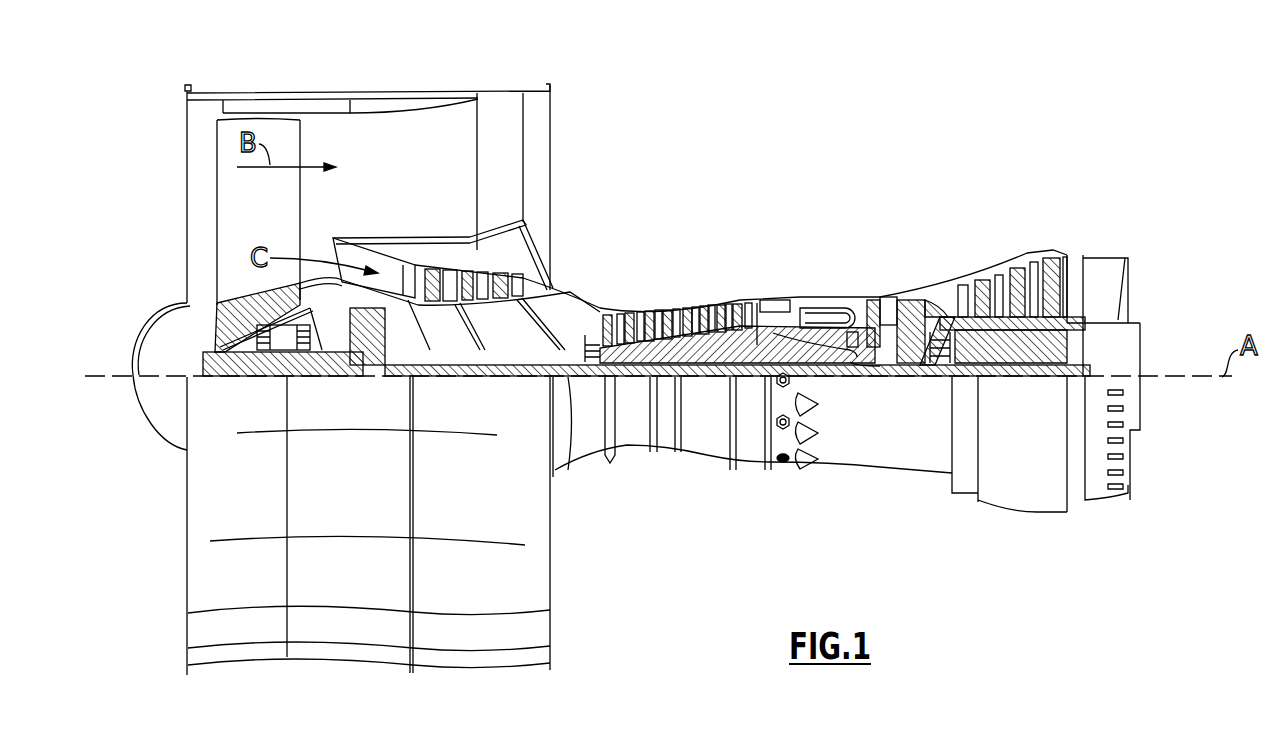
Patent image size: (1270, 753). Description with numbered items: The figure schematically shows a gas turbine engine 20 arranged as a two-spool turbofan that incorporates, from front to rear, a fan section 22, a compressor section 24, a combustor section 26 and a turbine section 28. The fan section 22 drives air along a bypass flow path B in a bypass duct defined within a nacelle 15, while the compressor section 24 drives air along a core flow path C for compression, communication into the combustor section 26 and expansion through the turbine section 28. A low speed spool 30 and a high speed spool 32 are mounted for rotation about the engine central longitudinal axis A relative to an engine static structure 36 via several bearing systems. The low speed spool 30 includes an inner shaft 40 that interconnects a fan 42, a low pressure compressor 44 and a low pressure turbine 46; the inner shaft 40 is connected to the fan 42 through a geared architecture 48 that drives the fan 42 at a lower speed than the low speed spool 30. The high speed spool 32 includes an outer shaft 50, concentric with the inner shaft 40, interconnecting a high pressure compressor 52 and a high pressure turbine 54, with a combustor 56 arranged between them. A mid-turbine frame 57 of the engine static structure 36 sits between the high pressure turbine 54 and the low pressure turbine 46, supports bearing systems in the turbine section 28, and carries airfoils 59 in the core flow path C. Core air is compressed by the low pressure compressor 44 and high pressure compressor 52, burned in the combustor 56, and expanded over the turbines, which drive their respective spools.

The nacelle 15 is at (370, 95).
The gas turbine engine 20 is at (832, 140).
The fan section 22 is at (300, 82).
The compressor section 24 is at (607, 278).
The combustor section 26 is at (824, 266).
The turbine section 28 is at (972, 232).
The low speed spool 30 is at (707, 384).
The high speed spool 32 is at (752, 330).
The engine static structure 36 is at (747, 472).
The inner shaft 40 is at (570, 378).
The fan 42 is at (272, 220).
The low pressure compressor 44 is at (468, 288).
The low pressure turbine 46 is at (1015, 270).
The geared architecture 48 is at (374, 358).
The outer shaft 50 is at (834, 371).
The high pressure compressor 52 is at (680, 348).
The high pressure turbine 54 is at (890, 298).
The combustor 56 is at (822, 318).
The mid-turbine frame 57 is at (934, 280).
The airfoils 59 is at (955, 335).